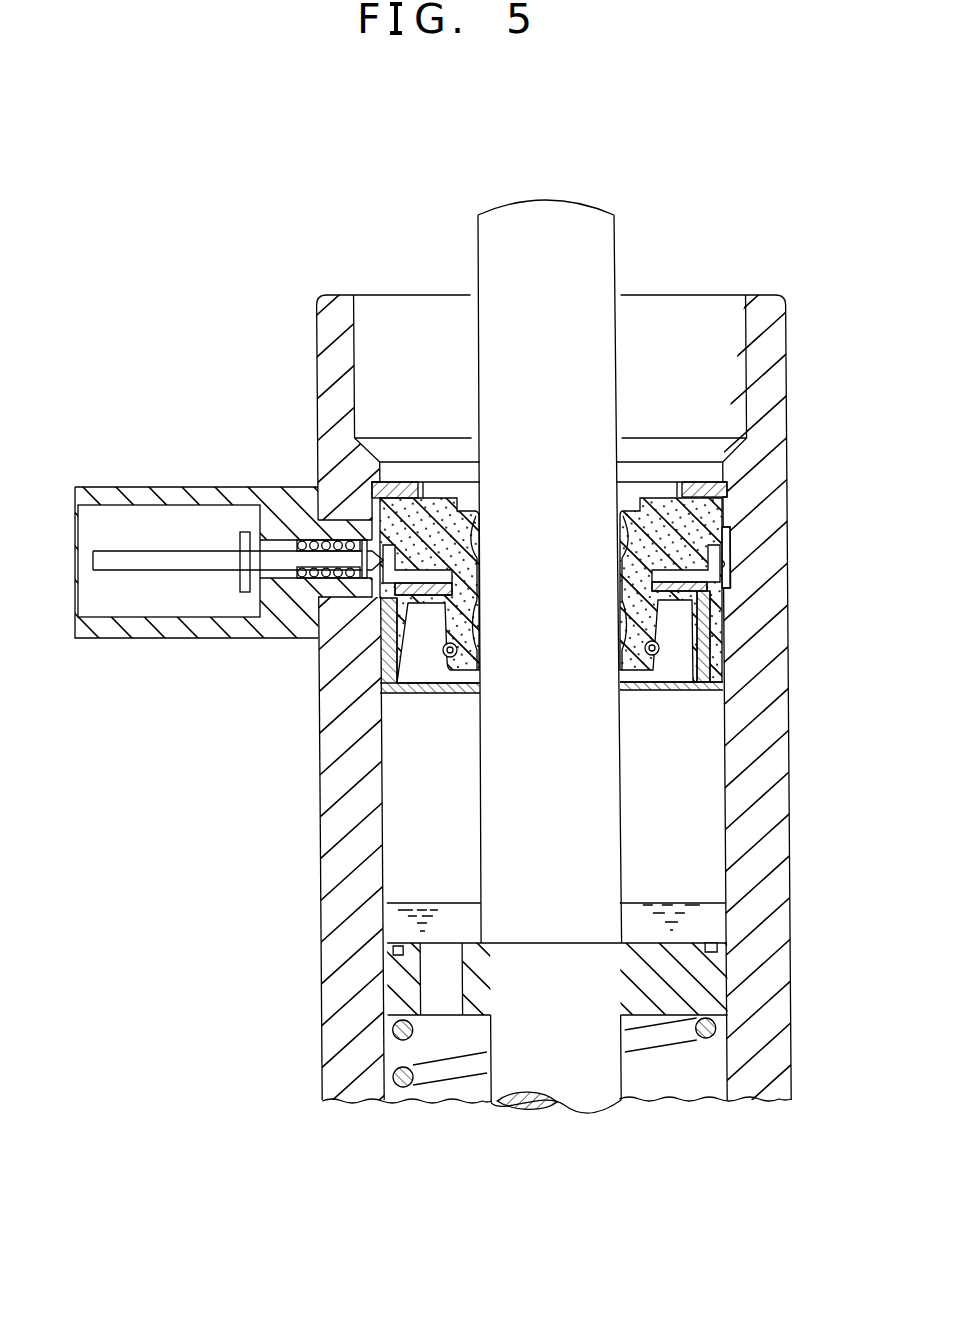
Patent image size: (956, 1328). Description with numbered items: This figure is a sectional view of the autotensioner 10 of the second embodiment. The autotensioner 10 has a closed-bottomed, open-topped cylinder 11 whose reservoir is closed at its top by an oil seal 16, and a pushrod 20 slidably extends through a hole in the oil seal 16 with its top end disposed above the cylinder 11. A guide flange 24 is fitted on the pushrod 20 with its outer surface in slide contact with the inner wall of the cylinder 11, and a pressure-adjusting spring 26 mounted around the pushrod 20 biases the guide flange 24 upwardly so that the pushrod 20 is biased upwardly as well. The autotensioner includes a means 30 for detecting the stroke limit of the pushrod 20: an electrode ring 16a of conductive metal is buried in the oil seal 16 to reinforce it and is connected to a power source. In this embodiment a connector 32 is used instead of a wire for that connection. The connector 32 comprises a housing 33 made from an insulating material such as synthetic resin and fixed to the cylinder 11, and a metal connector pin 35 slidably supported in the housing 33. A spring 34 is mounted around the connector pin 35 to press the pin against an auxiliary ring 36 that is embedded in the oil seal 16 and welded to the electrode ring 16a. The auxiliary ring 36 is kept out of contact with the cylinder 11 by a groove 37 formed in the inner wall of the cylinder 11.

The autotensioner 10 is at (322, 277).
The cylinder 11 is at (322, 337).
The oil seal 16 is at (380, 637).
The electrode ring 16a is at (396, 688).
The pushrod 20 is at (495, 248).
The guide flange 24 is at (387, 975).
The pressure-adjusting spring 26 is at (440, 1072).
The means for detecting the stroke limit 30 is at (268, 477).
The connector 32 is at (110, 487).
The housing 33 is at (188, 495).
The spring 34 is at (296, 581).
The connector pin 35 is at (152, 568).
The auxiliary ring 36 is at (392, 560).
The groove 37 is at (731, 562).